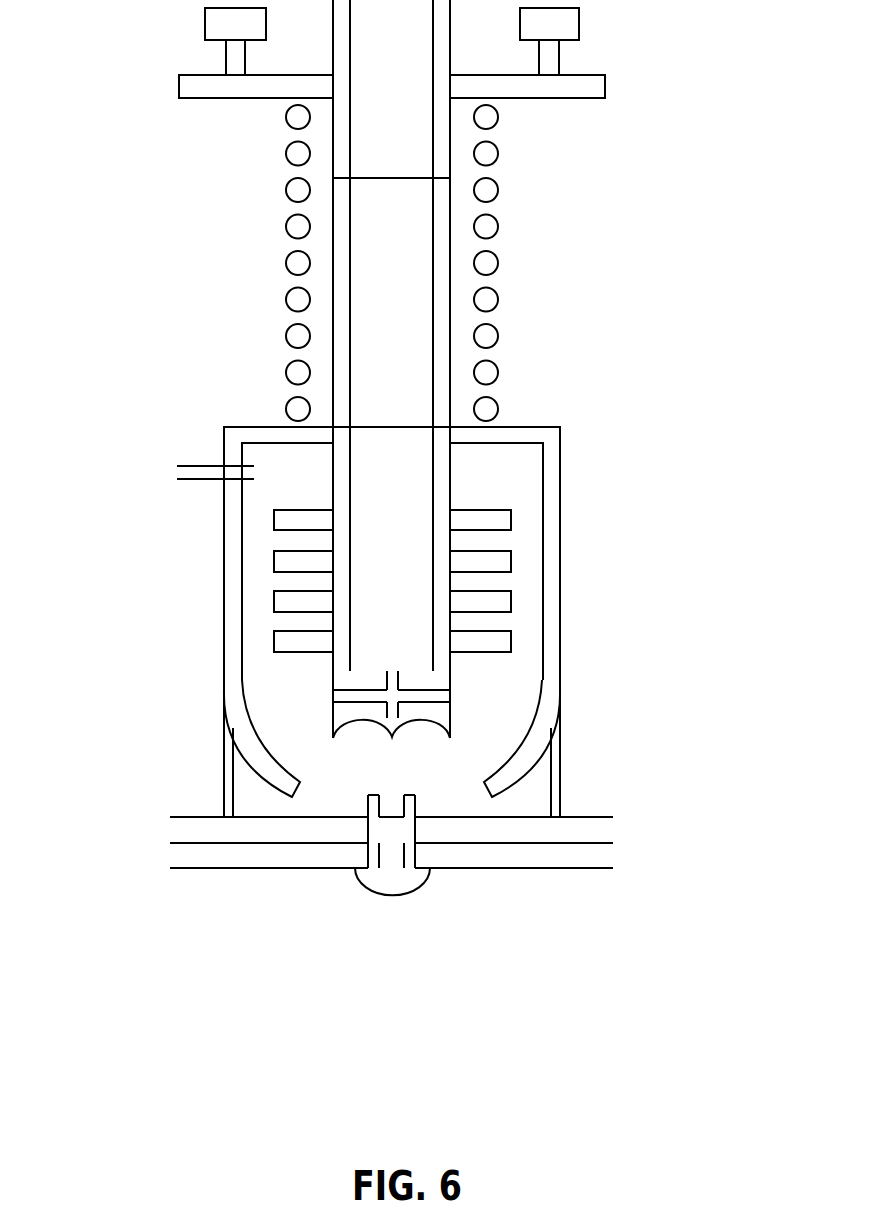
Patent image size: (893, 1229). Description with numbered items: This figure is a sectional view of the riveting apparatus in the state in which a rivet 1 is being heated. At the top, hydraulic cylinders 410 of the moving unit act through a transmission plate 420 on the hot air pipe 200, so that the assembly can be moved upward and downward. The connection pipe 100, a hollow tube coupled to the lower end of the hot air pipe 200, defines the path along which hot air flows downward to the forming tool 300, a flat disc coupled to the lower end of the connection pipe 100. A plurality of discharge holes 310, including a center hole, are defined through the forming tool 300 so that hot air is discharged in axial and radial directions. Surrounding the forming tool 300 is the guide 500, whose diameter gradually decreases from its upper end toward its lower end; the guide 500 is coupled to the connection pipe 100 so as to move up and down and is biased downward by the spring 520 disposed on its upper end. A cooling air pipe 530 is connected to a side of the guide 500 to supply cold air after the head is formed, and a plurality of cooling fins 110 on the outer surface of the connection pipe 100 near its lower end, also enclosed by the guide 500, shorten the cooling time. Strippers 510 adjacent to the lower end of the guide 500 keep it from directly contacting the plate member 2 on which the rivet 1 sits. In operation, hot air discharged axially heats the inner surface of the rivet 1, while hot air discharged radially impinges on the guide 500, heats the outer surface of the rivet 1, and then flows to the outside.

The rivet 1 is at (395, 878).
The plate member 2 is at (555, 855).
The connection pipe 100 is at (443, 290).
The cooling fins 110 is at (495, 520).
The hot air pipe 200 is at (440, 142).
The forming tool 300 is at (483, 733).
The discharge holes 310 is at (445, 696).
The hydraulic cylinders 410 is at (547, 60).
The transmission plate 420 is at (597, 87).
The guide 500 is at (550, 593).
The strippers 510 is at (555, 775).
The spring 520 is at (297, 297).
The cooling air pipe 530 is at (192, 473).